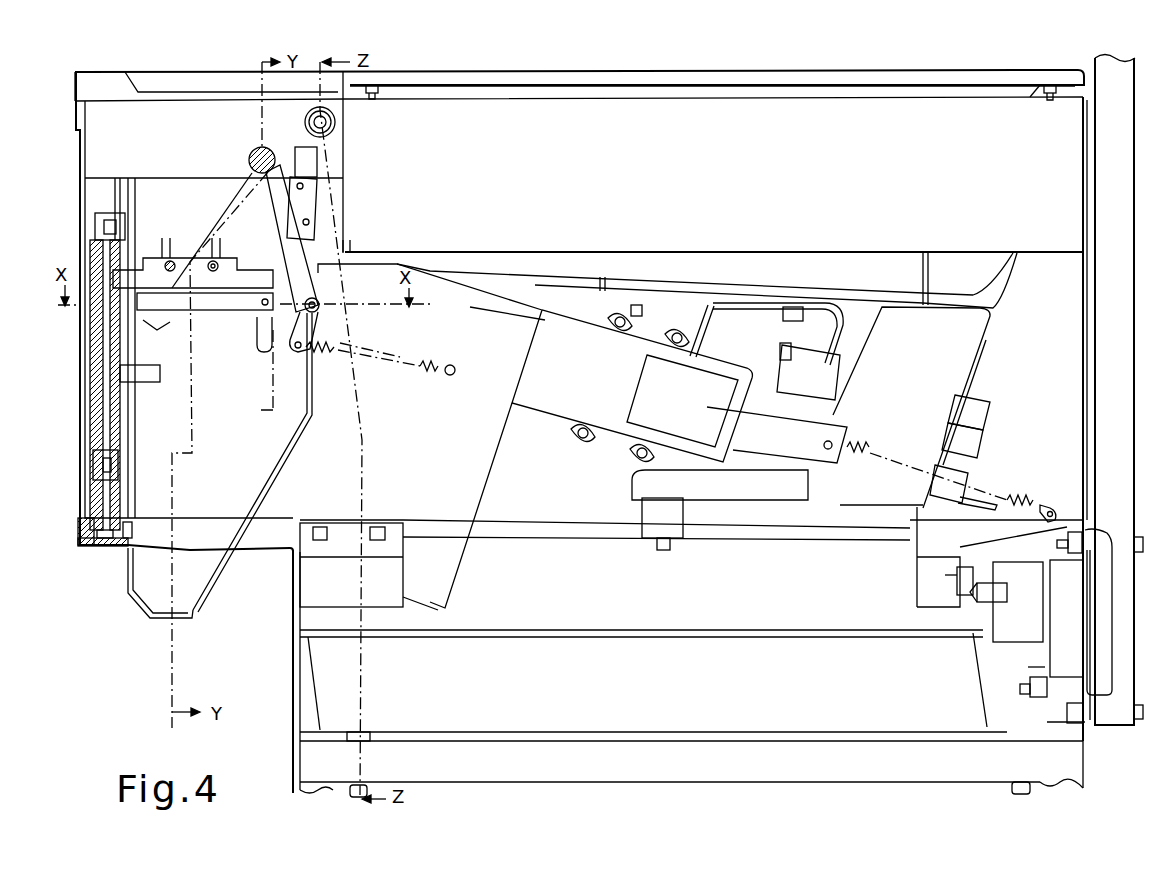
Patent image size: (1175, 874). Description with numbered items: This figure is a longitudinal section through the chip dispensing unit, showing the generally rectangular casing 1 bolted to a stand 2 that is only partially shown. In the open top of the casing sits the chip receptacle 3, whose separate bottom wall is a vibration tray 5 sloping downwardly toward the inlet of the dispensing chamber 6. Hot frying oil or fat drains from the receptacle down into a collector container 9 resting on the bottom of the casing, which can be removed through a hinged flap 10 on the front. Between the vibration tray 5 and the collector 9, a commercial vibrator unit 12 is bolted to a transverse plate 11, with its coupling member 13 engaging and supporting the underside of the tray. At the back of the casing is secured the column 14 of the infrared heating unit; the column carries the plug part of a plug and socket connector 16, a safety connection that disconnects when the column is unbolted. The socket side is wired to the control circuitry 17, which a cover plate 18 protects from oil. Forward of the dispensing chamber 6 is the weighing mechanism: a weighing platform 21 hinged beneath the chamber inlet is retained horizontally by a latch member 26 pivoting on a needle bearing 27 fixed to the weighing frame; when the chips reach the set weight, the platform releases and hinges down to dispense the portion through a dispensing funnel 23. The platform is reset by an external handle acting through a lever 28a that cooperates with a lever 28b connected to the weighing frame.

The casing 1 is at (1088, 358).
The stand 2 is at (1067, 778).
The chip receptacle 3 is at (961, 197).
The vibration tray 5 is at (847, 289).
The dispensing chamber 6 is at (185, 223).
The collector container 9 is at (674, 698).
The hinged flap 10 is at (290, 708).
The transverse plate 11 is at (780, 543).
The vibrator unit 12 is at (920, 393).
The coupling member 13 is at (748, 310).
The column 14 is at (1120, 458).
The plug and socket connector 16 is at (1086, 730).
The control circuitry 17 is at (1065, 618).
The cover plate 18 is at (1017, 520).
The weighing platform 21 is at (223, 308).
The dispensing funnel 23 is at (190, 595).
The latch member 26 is at (195, 303).
The needle bearing 27 is at (150, 383).
The lever 28a is at (283, 257).
The lever 28b is at (220, 312).